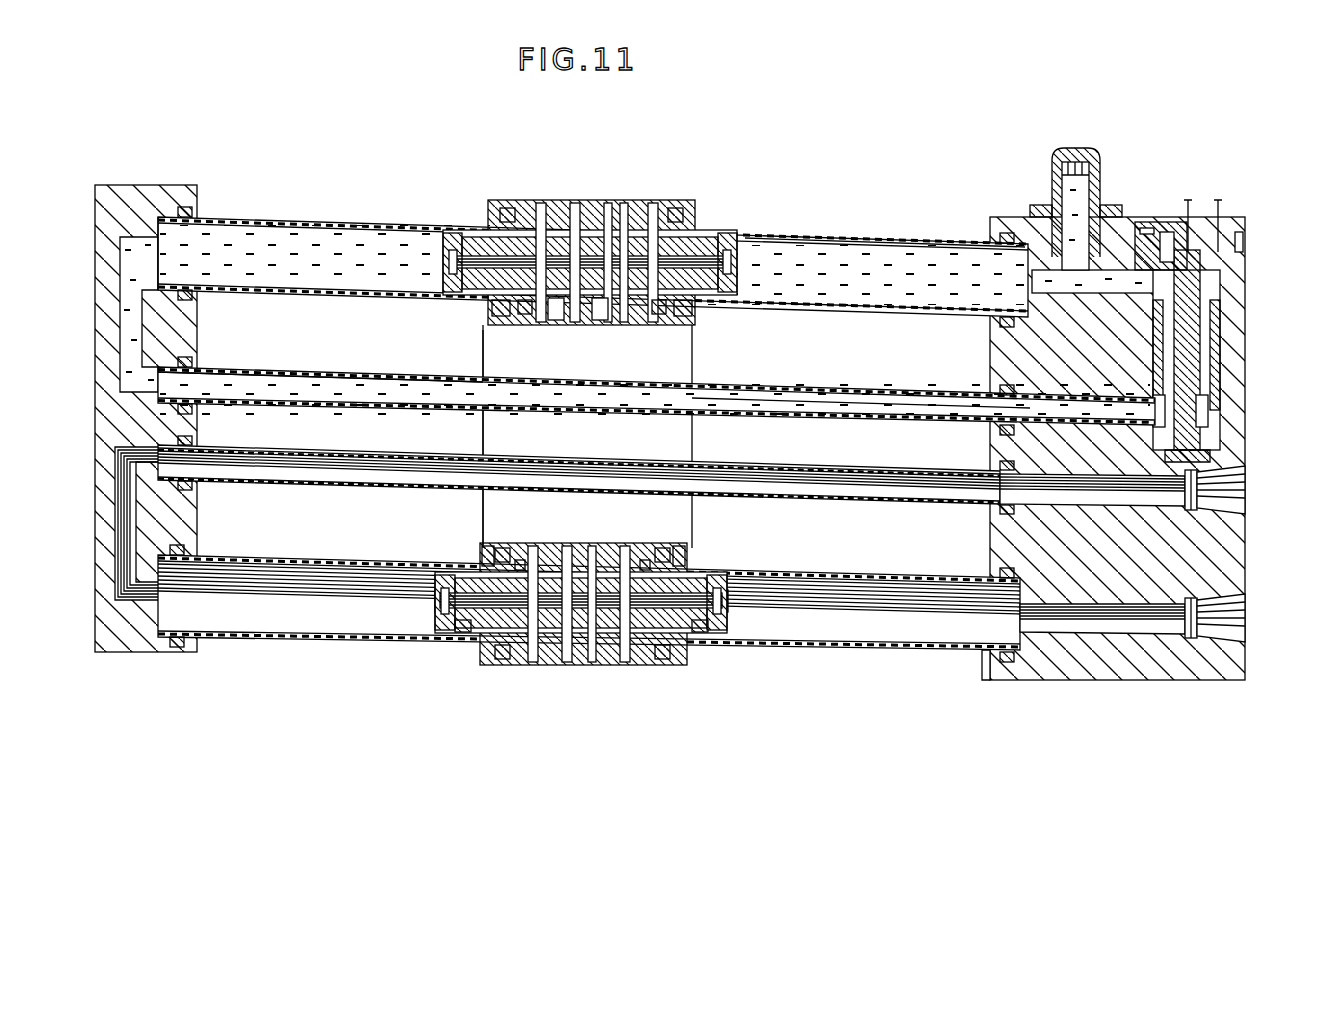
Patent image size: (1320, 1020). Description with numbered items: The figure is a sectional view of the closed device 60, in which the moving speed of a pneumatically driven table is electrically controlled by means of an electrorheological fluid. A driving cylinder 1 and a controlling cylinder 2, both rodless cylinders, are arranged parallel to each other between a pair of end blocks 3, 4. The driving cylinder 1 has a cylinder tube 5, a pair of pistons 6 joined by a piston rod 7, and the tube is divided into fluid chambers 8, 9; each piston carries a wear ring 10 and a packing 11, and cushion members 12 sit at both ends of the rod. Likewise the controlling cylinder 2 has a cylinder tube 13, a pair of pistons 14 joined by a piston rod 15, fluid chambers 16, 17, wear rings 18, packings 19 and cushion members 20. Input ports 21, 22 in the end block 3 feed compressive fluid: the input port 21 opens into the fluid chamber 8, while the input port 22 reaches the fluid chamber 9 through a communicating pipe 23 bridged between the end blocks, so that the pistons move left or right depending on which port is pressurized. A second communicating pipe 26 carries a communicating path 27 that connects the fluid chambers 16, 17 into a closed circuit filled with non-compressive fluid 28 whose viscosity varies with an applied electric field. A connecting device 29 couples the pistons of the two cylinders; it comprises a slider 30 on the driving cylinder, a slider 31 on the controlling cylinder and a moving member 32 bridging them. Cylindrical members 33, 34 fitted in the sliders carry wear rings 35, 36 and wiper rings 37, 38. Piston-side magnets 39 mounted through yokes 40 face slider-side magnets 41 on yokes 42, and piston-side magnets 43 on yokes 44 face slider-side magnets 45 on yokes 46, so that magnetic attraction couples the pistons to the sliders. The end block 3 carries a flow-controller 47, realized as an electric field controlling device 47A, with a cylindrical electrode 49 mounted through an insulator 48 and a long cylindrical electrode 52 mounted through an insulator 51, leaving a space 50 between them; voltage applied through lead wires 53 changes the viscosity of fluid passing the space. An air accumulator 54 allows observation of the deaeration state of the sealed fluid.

The driving cylinder 1 is at (285, 536).
The controlling cylinder 2 is at (280, 173).
The end block 3 is at (1225, 548).
The end block 4 is at (150, 645).
The cylinder tube 5 is at (335, 558).
The pistons 6 is at (460, 578).
The piston rod 7 is at (438, 602).
The fluid chamber 8 is at (798, 600).
The fluid chamber 9 is at (235, 572).
The wear ring 10 is at (468, 635).
The packing 11 is at (520, 660).
The cushion members 12 is at (430, 630).
The cylinder tube 13 is at (345, 232).
The pistons 14 is at (475, 222).
The piston rod 15 is at (452, 292).
The fluid chamber 16 is at (812, 246).
The fluid chamber 17 is at (232, 235).
The wear ring 18 is at (503, 210).
The packing 19 is at (541, 205).
The cushion members 20 is at (445, 228).
The input port 21 is at (1222, 642).
The input port 22 is at (1228, 500).
The communicating pipe 23 is at (770, 452).
The communicating pipe 26 is at (805, 386).
The communicating path 27 is at (955, 400).
The non-compressive fluid 28 is at (850, 240).
The connecting device 29 is at (483, 343).
The slider 30 is at (500, 665).
The slider 31 is at (524, 325).
The moving member 32 is at (483, 420).
The cylindrical members 33 is at (502, 548).
The cylindrical members 34 is at (490, 328).
The wear ring 35 is at (522, 560).
The wear ring 36 is at (527, 316).
The wiper ring 37 is at (486, 548).
The wiper ring 38 is at (499, 318).
The magnets on the piston side 39 is at (592, 550).
The yokes 40 is at (556, 548).
The magnets on the slider side 41 is at (545, 660).
The yokes 42 is at (600, 660).
The magnets on the piston side 43 is at (576, 205).
The yokes 44 is at (624, 205).
The magnets on the slider side 45 is at (556, 320).
The yokes 46 is at (600, 320).
The flow-controller 47 is at (1149, 217).
The electric field controlling device 47A is at (1170, 228).
The insulator 48 is at (1220, 360).
The cylindrical electrode 49 is at (1200, 395).
The space 50 is at (1222, 280).
The insulator 51 is at (1243, 240).
The long cylindrical electrode 52 is at (1200, 408).
The lead wires 53 is at (1205, 200).
The air accumulator 54 is at (1055, 175).
The closed device 60 is at (192, 120).